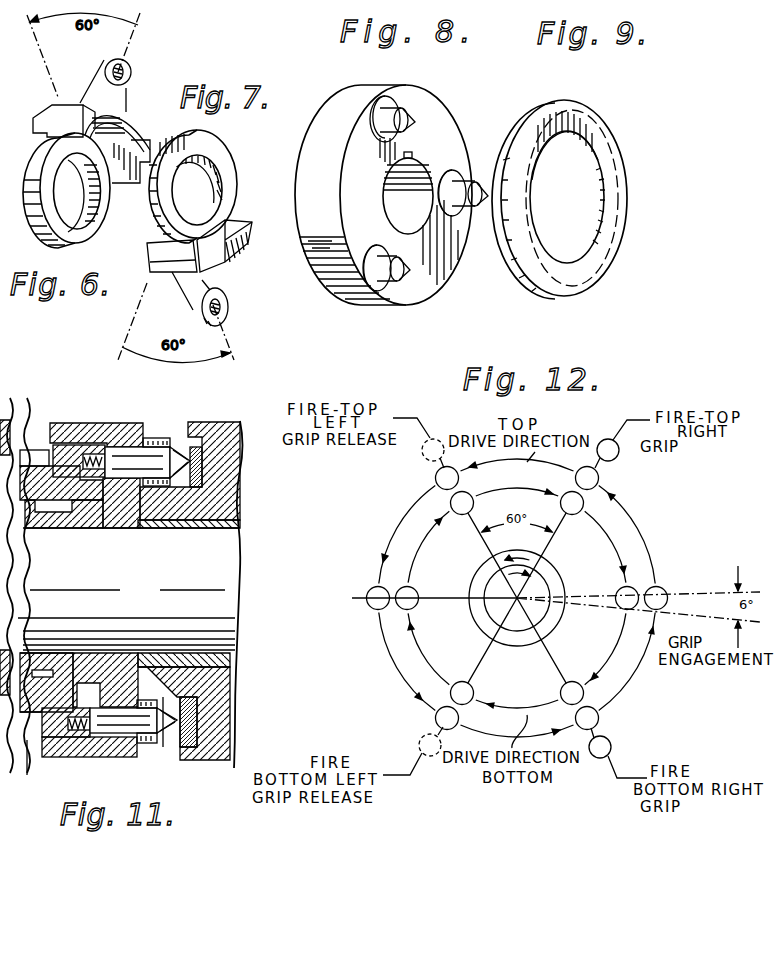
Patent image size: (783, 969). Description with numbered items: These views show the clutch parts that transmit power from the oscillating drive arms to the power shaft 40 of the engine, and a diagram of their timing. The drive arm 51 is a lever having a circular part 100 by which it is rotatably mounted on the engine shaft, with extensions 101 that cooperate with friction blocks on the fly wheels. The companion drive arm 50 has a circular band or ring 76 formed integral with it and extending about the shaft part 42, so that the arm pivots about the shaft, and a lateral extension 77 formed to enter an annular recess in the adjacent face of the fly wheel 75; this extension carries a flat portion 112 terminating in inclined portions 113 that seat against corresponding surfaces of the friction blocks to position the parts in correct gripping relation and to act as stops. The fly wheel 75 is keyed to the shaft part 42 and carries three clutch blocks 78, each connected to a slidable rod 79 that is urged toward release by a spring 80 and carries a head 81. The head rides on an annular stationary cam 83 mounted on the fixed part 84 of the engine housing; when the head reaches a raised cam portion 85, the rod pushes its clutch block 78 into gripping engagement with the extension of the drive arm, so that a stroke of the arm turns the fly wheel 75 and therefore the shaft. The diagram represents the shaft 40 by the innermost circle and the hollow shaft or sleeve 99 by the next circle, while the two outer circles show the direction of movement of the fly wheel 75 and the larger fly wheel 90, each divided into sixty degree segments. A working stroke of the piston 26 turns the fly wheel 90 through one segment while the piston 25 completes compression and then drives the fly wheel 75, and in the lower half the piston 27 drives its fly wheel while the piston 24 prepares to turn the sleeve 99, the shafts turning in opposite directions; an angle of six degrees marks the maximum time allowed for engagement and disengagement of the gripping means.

In FIG. 12, the piston 24 is at (600, 718).
In FIG. 12, the piston 25 is at (585, 504).
In FIG. 12, the piston 26 is at (600, 480).
In FIG. 12, the piston 27 is at (584, 695).
In FIG. 12, the power shaft 40 is at (474, 620).
In FIG. 11, the part of engine shaft 42 is at (236, 610).
In FIG. 7, the drive arm 50 is at (230, 290).
In FIG. 11, the drive arm 50 is at (27, 770).
In FIG. 6, the drive arm 51 is at (133, 100).
In FIG. 11, the drive arm 51 is at (12, 420).
In FIG. 8, the fly wheel 75 is at (355, 90).
In FIG. 11, the fly wheel 75 is at (85, 426).
In FIG. 12, the fly wheel 75 is at (610, 533).
In FIG. 7, the circular band or ring 76 is at (217, 140).
In FIG. 11, the circular band or ring 76 is at (23, 528).
In FIG. 7, the lateral extension 77 is at (253, 233).
In FIG. 11, the lateral extension 77 is at (58, 657).
In FIG. 11, the clutch block 78 is at (75, 455).
In FIG. 11, the slidable rod 79 is at (123, 455).
In FIG. 11, the spring 80 is at (152, 438).
In FIG. 8, the head 81 is at (417, 108).
In FIG. 11, the head 81 is at (180, 445).
In FIG. 9, the annular stationary cam 83 is at (617, 142).
In FIG. 11, the annular stationary cam 83 is at (205, 718).
In FIG. 11, the fixed part of engine housing 84 is at (232, 683).
In FIG. 9, the raised cam portion 85 is at (530, 112).
In FIG. 11, the raised cam portion 85 is at (207, 447).
In FIG. 12, the fly wheel 90 is at (650, 543).
In FIG. 12, the hollow shaft or sleeve 99 is at (478, 637).
In FIG. 6, the circular part 100 is at (83, 242).
In FIG. 6, the extension 101 is at (43, 117).
In FIG. 11, the extension 101 is at (67, 427).
In FIG. 7, the flat portion 112 is at (233, 253).
In FIG. 7, the inclined portion 113 is at (247, 242).